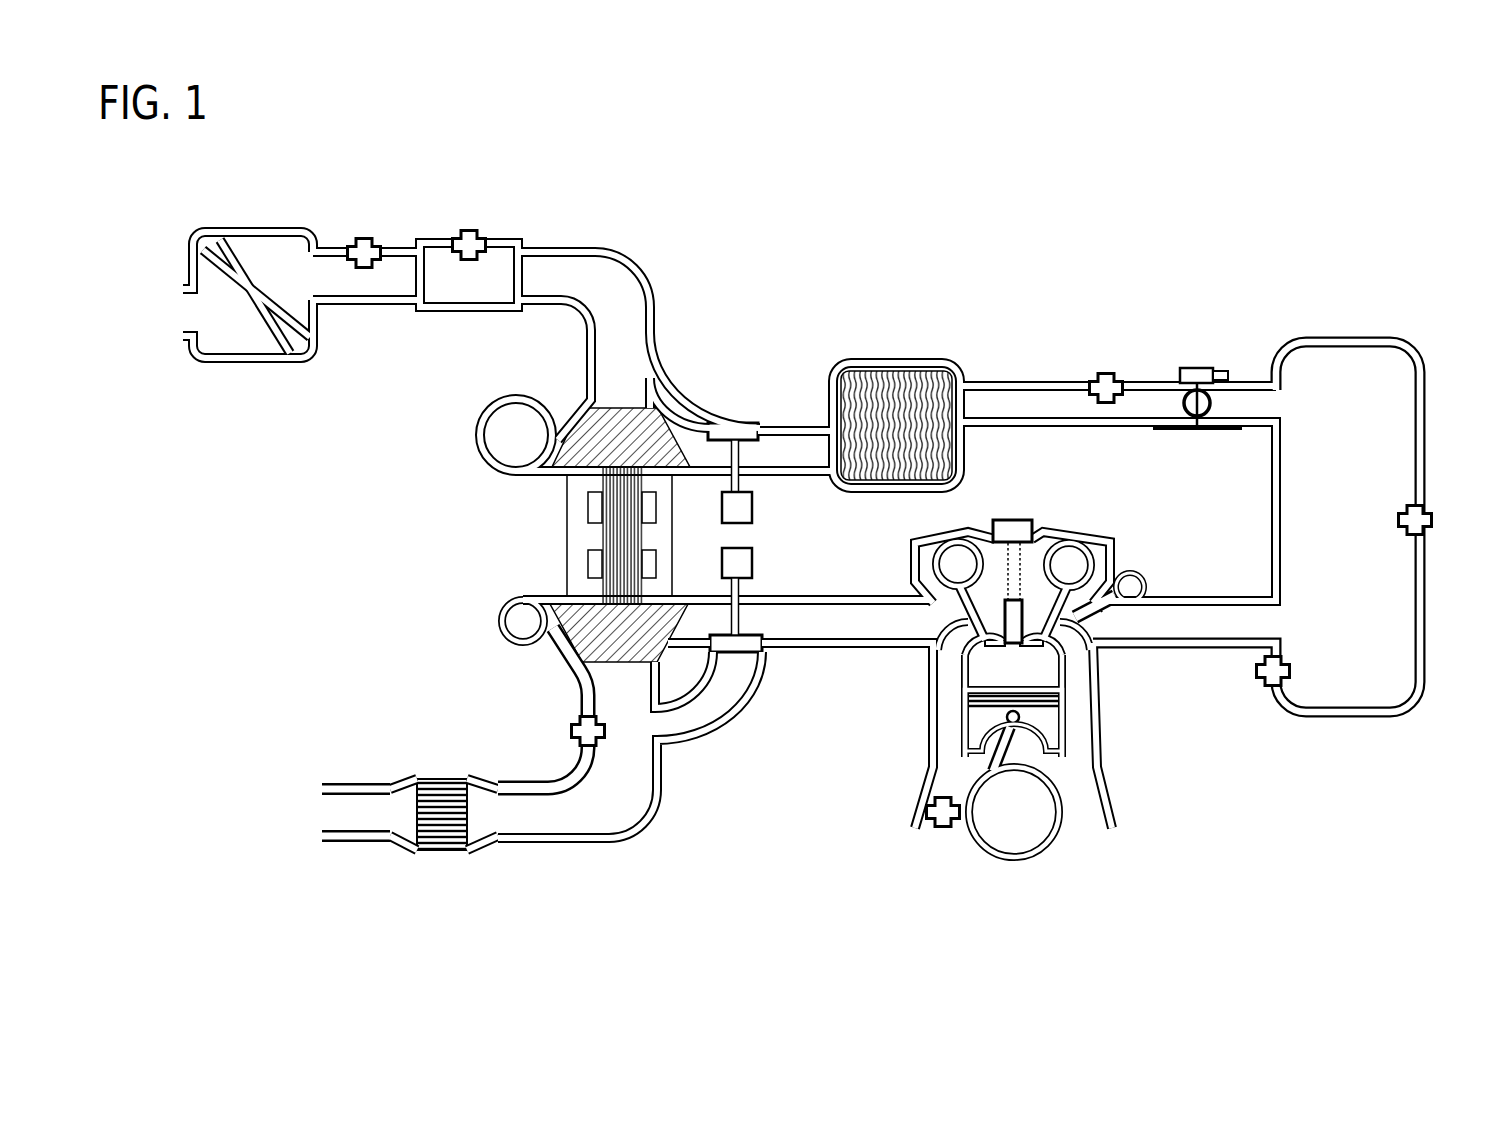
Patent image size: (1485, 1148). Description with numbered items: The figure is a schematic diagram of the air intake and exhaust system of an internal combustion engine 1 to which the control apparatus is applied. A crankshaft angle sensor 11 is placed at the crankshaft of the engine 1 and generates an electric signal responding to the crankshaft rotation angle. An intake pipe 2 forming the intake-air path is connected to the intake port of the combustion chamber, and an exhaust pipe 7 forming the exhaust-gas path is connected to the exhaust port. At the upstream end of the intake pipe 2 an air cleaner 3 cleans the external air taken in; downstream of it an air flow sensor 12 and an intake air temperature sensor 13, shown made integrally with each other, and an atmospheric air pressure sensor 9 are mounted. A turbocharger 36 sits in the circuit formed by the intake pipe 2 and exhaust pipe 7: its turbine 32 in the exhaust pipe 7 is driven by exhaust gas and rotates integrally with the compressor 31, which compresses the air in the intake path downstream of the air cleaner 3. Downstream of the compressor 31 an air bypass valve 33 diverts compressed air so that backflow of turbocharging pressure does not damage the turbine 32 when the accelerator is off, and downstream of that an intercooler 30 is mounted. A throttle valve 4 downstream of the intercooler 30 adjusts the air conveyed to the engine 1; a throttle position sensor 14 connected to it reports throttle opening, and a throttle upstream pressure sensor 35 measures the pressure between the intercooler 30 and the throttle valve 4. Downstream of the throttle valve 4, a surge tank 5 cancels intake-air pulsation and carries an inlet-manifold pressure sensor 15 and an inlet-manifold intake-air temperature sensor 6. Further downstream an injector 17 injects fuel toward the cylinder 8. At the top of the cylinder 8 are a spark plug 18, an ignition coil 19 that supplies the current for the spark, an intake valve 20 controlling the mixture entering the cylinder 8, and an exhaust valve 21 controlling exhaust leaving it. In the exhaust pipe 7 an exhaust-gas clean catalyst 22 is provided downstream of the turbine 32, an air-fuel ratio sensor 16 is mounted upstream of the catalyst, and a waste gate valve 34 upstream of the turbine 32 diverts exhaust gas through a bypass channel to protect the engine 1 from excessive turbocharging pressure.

The engine 1 is at (1078, 805).
The intake pipe 2 is at (343, 282).
The air cleaner 3 is at (260, 247).
The throttle valve 4 is at (1200, 428).
The surge tank 5 is at (1390, 387).
The inlet-manifold intake-air temperature sensor 6 is at (1257, 670).
The exhaust pipe 7 is at (333, 815).
The cylinder 8 is at (1047, 677).
The atmospheric air pressure sensor 9 is at (363, 238).
The crankshaft angle sensor 11 is at (915, 817).
The air flow sensor 12 is at (470, 237).
The intake air temperature sensor 13 is at (470, 237).
The throttle position sensor 14 is at (1192, 368).
The inlet-manifold pressure sensor 15 is at (1430, 513).
The air-fuel ratio sensor 16 is at (572, 728).
The injector 17 is at (1130, 583).
The spark plug 18 is at (1005, 612).
The ignition coil 19 is at (1013, 533).
The intake valve 20 is at (1052, 625).
The exhaust valve 21 is at (967, 622).
The exhaust-gas clean catalyst 22 is at (480, 818).
The intercooler 30 is at (898, 373).
The compressor 31 is at (580, 410).
The turbine 32 is at (560, 597).
The air bypass valve 33 is at (738, 507).
The waste gate valve 34 is at (738, 565).
The throttle upstream pressure sensor 35 is at (1103, 373).
The turbocharger 36 is at (582, 481).